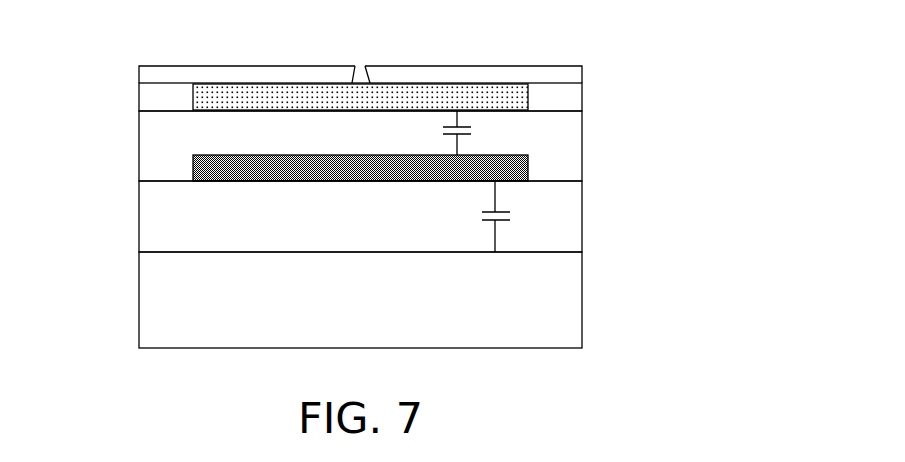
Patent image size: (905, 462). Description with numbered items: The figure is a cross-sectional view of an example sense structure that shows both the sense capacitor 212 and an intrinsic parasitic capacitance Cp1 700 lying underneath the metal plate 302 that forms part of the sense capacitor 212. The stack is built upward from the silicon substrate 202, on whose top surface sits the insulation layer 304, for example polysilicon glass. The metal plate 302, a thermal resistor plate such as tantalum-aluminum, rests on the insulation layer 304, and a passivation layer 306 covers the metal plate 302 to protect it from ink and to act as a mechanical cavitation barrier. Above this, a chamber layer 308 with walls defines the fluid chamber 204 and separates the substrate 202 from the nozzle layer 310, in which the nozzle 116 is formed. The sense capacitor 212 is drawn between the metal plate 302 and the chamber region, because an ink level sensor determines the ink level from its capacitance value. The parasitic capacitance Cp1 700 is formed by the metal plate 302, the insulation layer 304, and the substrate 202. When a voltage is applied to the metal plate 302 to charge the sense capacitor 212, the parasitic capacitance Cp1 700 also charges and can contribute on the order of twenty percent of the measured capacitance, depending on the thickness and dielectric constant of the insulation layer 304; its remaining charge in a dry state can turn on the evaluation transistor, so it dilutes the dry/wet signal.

The nozzle 116 is at (372, 40).
The silicon substrate 202 is at (583, 298).
The fluid chamber 204 is at (192, 103).
The sense capacitor 212 is at (428, 128).
The metal plate 302 is at (192, 163).
The insulation layer 304 is at (583, 225).
The passivation layer 306 is at (583, 156).
The chamber layer 308 is at (583, 98).
The nozzle layer 310 is at (500, 66).
The intrinsic parasitic capacitance Cp1 700 is at (462, 210).